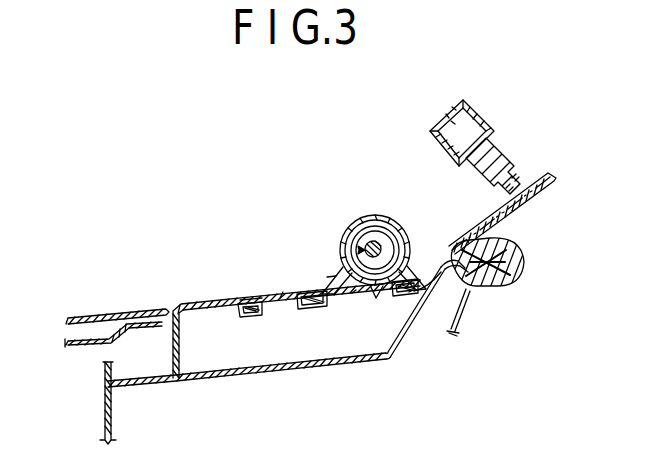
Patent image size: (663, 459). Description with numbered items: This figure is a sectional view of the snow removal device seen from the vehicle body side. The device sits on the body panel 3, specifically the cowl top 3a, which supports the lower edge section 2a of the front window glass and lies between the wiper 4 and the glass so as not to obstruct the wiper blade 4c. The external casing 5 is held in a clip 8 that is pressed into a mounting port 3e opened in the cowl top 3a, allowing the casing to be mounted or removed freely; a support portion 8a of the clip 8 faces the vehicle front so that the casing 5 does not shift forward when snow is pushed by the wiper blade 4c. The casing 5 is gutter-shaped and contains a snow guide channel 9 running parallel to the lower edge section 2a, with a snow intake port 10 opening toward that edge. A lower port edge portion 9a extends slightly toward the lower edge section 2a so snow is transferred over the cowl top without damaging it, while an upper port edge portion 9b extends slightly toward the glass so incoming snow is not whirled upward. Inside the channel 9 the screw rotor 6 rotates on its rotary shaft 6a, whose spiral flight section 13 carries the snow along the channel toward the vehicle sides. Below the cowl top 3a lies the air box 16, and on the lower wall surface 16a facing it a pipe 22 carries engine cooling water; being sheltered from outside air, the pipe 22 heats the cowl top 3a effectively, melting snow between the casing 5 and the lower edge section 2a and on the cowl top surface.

The lower edge section 2a is at (523, 205).
The body panel 3 is at (152, 312).
The cowl top 3a is at (247, 300).
The mounting port 3e is at (377, 299).
The wiper 4 is at (463, 100).
The wiper blade 4c is at (493, 150).
The external casing 5 is at (354, 221).
The screw rotor 6 is at (360, 250).
The rotary shaft 6a is at (354, 295).
The clip 8 is at (347, 237).
The support portion 8a is at (327, 277).
The snow guide channel 9 is at (402, 240).
The lower port edge portion 9a is at (409, 297).
The upper port edge portion 9b is at (386, 221).
The snow intake port 10 is at (370, 232).
The spiral flight section 13 is at (392, 256).
The air box 16 is at (205, 364).
The lower wall surface 16a is at (281, 298).
The pipe 22 is at (251, 317).